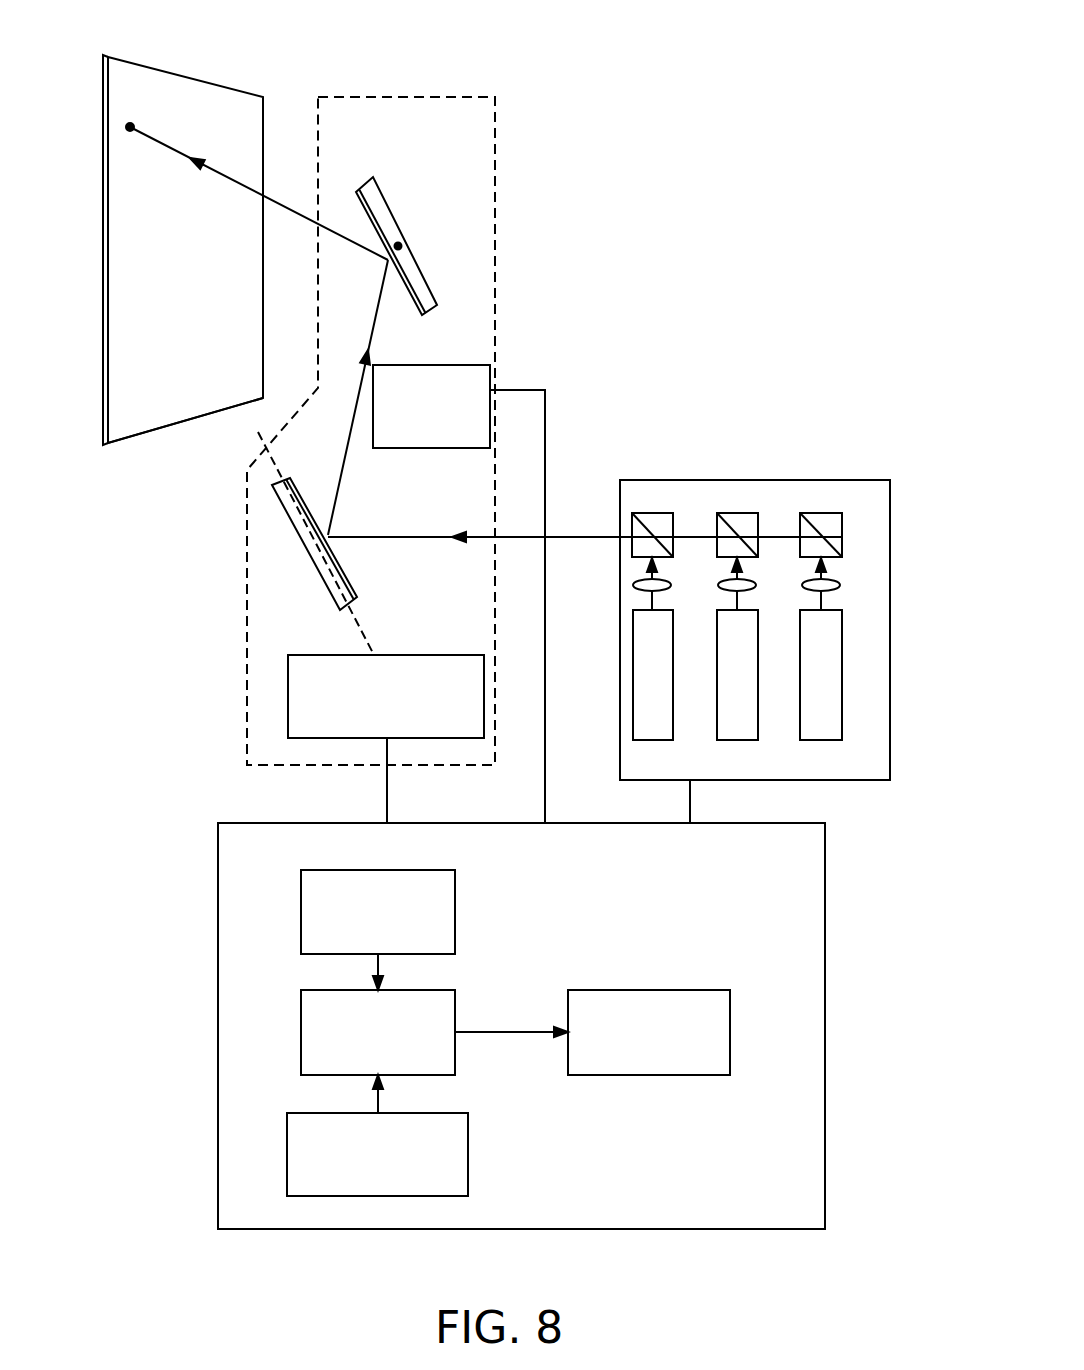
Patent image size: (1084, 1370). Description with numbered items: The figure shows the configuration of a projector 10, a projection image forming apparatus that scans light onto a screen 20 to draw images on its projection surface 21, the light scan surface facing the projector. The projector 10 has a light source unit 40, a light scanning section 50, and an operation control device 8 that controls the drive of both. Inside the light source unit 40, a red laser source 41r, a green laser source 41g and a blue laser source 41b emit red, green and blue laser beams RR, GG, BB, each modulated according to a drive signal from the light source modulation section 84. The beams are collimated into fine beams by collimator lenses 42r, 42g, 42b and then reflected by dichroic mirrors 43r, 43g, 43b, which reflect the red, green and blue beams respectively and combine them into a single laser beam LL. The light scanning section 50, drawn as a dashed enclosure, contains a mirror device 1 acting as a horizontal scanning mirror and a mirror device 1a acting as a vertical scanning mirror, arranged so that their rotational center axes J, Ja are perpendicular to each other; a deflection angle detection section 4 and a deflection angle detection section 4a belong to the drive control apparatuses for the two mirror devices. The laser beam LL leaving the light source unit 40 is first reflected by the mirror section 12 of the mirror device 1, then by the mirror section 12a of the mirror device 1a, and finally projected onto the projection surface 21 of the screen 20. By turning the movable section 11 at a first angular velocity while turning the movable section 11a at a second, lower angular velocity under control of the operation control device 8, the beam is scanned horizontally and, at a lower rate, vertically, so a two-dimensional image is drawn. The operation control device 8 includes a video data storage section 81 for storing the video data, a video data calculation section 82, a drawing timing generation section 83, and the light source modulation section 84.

The projector 10 is at (662, 134).
The screen 20 is at (163, 70).
The projection surface 21 is at (165, 408).
The light scanning section 50 is at (247, 592).
The mirror device 1 is at (333, 543).
The movable section 11 is at (343, 588).
The mirror section 12 is at (336, 557).
The rotational center axis J is at (277, 470).
The deflection angle detection section 4 is at (405, 655).
The mirror device 1a is at (421, 249).
The movable section 11a is at (383, 213).
The mirror section 12a is at (398, 290).
The rotational center axis Ja is at (402, 246).
The deflection angle detection section 4a is at (412, 450).
The laser beam LL is at (585, 526).
The light source unit 40 is at (818, 480).
The red laser source 41r is at (650, 733).
The green laser source 41g is at (735, 733).
The blue laser source 41b is at (820, 733).
The collimator lens 42r is at (667, 586).
The collimator lens 42g is at (752, 586).
The collimator lens 42b is at (836, 586).
The dichroic mirror 43r is at (662, 522).
The dichroic mirror 43g is at (746, 522).
The dichroic mirror 43b is at (830, 522).
The red laser beam RR is at (655, 600).
The green laser beam GG is at (740, 600).
The blue laser beam BB is at (824, 600).
The operation control device 8 is at (825, 896).
The video data storage section 81 is at (455, 904).
The video data calculation section 82 is at (455, 1000).
The drawing timing generation section 83 is at (468, 1144).
The light source modulation section 84 is at (690, 990).